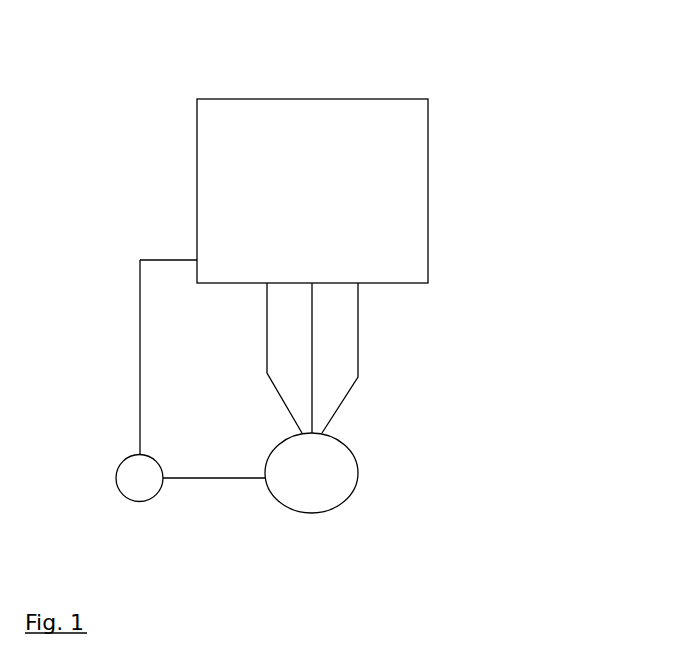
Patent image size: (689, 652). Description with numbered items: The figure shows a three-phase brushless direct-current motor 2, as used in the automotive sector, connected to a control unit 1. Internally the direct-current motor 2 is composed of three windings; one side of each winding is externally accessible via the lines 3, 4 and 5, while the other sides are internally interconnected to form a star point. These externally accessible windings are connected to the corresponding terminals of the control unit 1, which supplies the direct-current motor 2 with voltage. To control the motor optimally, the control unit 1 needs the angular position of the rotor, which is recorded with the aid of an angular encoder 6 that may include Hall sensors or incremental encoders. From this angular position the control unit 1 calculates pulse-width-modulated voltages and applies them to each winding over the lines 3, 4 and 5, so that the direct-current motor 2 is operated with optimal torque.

The control unit 1 is at (313, 112).
The direct-current motor 2 is at (337, 500).
The line 3 is at (267, 373).
The line 4 is at (312, 328).
The line 5 is at (348, 387).
The angular encoder 6 is at (127, 468).